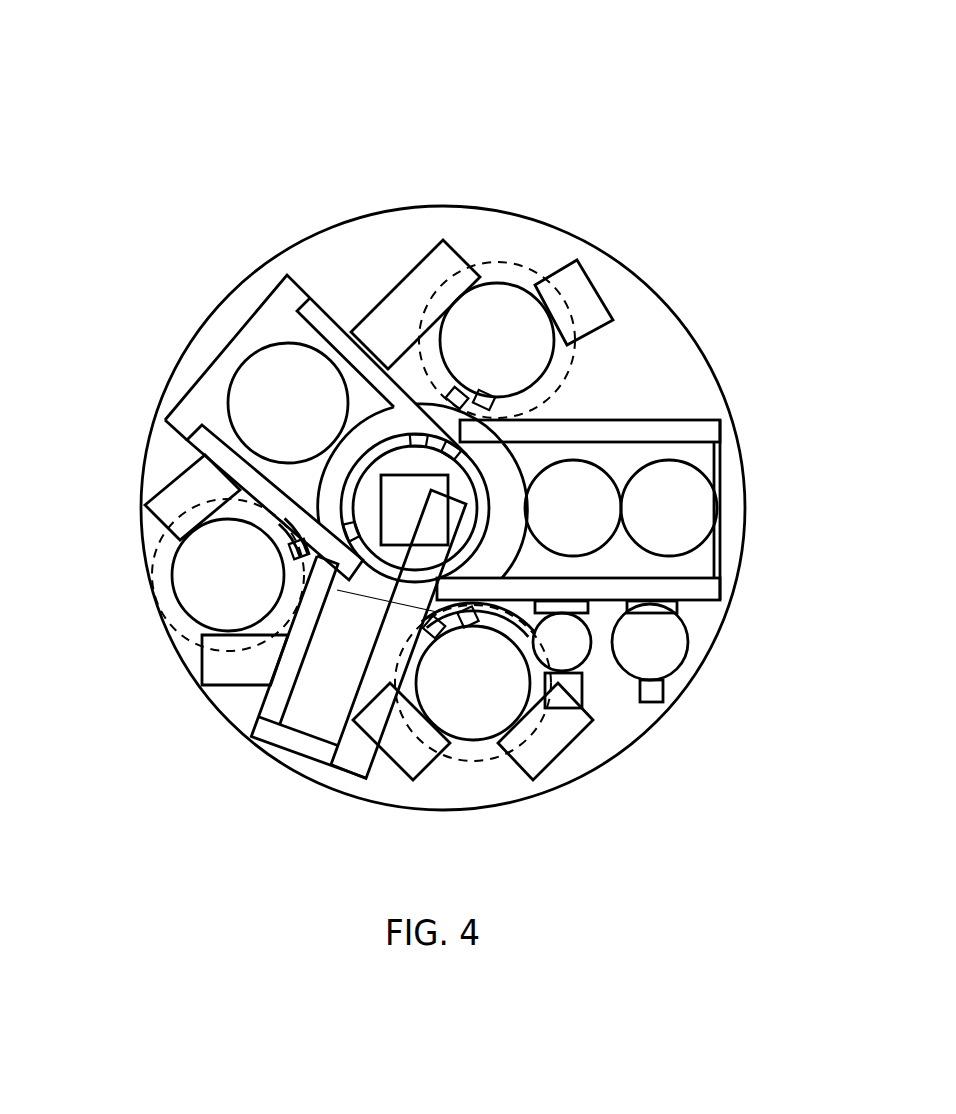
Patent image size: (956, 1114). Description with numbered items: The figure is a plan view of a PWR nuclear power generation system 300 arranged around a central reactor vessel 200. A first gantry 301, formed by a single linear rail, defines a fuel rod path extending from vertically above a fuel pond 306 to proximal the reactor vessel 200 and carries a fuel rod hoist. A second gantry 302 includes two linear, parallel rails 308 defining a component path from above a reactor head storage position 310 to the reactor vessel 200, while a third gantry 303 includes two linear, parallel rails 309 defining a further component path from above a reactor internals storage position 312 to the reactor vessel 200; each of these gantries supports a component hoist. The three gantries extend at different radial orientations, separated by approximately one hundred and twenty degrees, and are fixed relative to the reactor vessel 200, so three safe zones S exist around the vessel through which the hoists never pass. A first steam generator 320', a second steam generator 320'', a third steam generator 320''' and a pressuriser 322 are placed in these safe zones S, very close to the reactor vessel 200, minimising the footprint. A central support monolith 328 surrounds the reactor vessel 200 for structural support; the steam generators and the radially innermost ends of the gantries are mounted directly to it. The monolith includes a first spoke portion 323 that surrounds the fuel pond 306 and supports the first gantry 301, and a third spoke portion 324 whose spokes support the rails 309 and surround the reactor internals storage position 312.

The PWR nuclear power generation system 300 is at (146, 72).
The second gantry 302 is at (300, 262).
The reactor vessel 200 is at (410, 443).
The third steam generator 320''' is at (482, 277).
The central support monolith 328 is at (497, 460).
The third spoke portion 324 is at (606, 420).
The third gantry 303 is at (690, 390).
The rails 308 is at (312, 313).
The reactor head storage position 310 is at (257, 388).
The rails 309 is at (720, 430).
The reactor internals storage position 312 is at (680, 518).
The first steam generator 320' is at (183, 553).
The first spoke portion 323 is at (270, 695).
The fuel pond 306 is at (310, 720).
The first gantry 301 is at (355, 765).
The second steam generator 320'' is at (473, 742).
The pressuriser 322 is at (570, 657).
The safe zones S is at (560, 218).